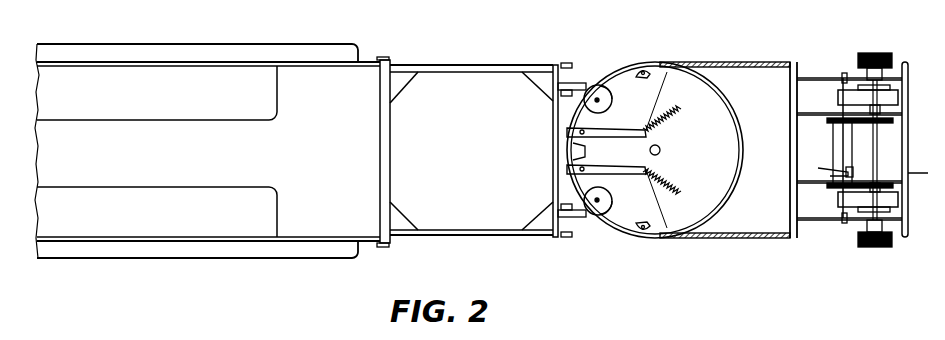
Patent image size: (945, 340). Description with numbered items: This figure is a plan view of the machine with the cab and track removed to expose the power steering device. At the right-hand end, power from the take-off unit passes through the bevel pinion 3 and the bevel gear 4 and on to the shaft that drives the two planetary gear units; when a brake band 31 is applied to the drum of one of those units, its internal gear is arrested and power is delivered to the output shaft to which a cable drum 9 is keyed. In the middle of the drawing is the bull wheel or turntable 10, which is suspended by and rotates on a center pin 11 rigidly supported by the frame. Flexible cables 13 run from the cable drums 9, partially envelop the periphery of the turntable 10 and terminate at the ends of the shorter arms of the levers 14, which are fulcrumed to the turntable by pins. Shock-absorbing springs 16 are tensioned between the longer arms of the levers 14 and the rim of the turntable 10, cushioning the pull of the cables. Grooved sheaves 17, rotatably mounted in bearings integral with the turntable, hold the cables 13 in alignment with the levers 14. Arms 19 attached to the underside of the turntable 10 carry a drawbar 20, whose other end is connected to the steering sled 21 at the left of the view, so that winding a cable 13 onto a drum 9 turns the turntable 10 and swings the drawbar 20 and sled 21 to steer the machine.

The bevel pinion 3 is at (852, 168).
The bevel gear 4 is at (823, 168).
The cable drum 9 is at (860, 55).
The turntable 10 is at (743, 122).
The center pin 11 is at (662, 154).
The flexible cable 13 is at (755, 62).
The lever 14 is at (600, 130).
The shock-absorbing spring 16 is at (659, 97).
The grooved sheave 17 is at (610, 107).
The arm 19 is at (577, 70).
The drawbar 20 is at (470, 236).
The steering sled 21 is at (320, 260).
The brake band 31 is at (900, 98).